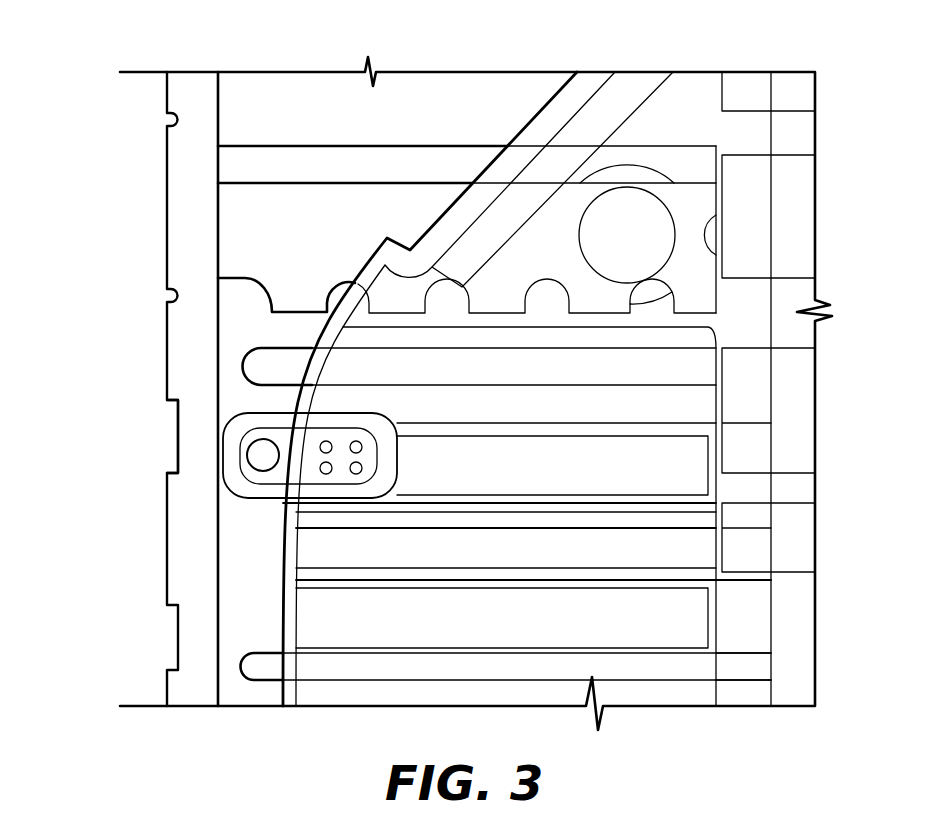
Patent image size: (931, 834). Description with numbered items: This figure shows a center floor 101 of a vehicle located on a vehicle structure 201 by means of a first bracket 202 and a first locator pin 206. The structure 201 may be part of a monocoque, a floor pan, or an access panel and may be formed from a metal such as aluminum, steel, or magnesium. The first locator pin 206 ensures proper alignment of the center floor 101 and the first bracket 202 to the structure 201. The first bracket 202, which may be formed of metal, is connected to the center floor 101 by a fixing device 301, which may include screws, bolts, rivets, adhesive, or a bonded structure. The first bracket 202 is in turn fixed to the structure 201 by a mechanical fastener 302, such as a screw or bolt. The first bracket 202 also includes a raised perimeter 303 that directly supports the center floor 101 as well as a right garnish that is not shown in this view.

The center floor 101 is at (779, 567).
The structure 201 is at (182, 153).
The first bracket 202 is at (186, 460).
The first locator pin 206 is at (631, 197).
The fixing device 301 is at (342, 483).
The mechanical fastener 302 is at (252, 470).
The raised perimeter 303 is at (250, 417).